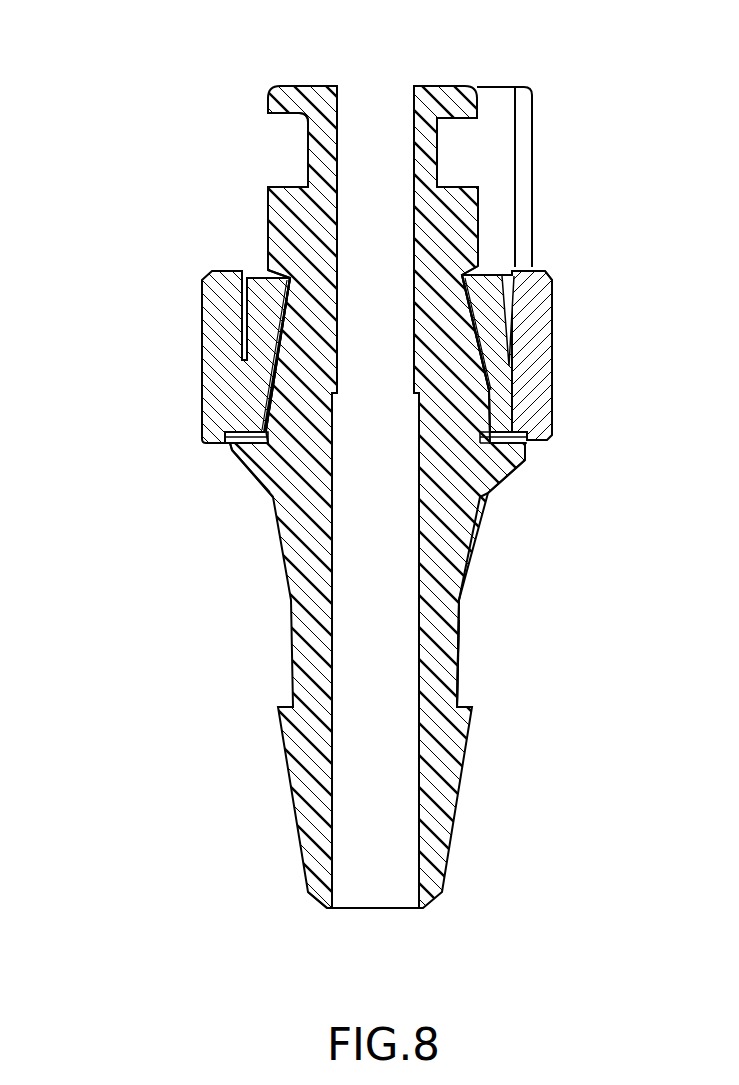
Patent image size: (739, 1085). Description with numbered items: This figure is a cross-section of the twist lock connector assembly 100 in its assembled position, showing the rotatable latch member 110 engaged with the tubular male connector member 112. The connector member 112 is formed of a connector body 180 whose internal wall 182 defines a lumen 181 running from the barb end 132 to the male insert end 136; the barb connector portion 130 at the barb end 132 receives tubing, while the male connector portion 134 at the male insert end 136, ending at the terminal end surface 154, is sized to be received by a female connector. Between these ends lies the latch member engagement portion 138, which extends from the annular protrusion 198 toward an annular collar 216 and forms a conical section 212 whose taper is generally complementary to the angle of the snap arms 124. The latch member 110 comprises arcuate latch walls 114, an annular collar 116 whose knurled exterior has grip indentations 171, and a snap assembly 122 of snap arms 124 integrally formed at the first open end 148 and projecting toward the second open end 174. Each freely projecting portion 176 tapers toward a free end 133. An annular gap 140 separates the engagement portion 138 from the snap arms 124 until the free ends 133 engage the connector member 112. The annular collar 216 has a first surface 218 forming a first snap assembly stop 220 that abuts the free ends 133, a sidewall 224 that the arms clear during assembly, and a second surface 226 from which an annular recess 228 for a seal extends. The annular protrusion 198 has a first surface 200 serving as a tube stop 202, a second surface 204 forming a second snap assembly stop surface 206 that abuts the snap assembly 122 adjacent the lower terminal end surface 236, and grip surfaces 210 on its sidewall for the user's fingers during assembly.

The twist lock connector assembly 100 is at (78, 137).
The rotatable latch member 110 is at (601, 304).
The male connector member 112 is at (614, 642).
The latch walls 114 is at (498, 112).
The annular collar 116 is at (552, 412).
The snap assembly 122 is at (243, 337).
The snap arms 124 is at (260, 308).
The barb connector portion 130 is at (462, 765).
The barb end 132 is at (318, 917).
The free ends 133 is at (268, 265).
The male connector portion 134 is at (268, 247).
The male insert end 136 is at (443, 75).
The latch member engagement portion 138 is at (280, 352).
The annular gap 140 is at (288, 408).
The first open end 148 is at (222, 450).
The terminal end surface 154 is at (322, 86).
The grip indentations 171 is at (513, 295).
The second open end 174 is at (236, 254).
The freely projecting portion 176 is at (488, 322).
The connector body 180 is at (477, 677).
The lumen 181 is at (402, 914).
The internal wall 182 is at (410, 853).
The annular protrusion 198 is at (502, 480).
The first surface 200 is at (490, 494).
The tube stop 202 is at (483, 497).
The second surface 204 is at (243, 447).
The second snap assembly stop surface 206 is at (532, 437).
The grip surfaces 210 is at (247, 476).
The conical section 212 is at (278, 358).
The annular collar 216 is at (268, 205).
The first surface 218 is at (480, 262).
The first snap assembly stop 220 is at (481, 270).
The sidewall 224 is at (478, 207).
The second surface 226 is at (450, 188).
The annular recess 228 is at (283, 131).
The lower terminal end surface 236 is at (218, 443).